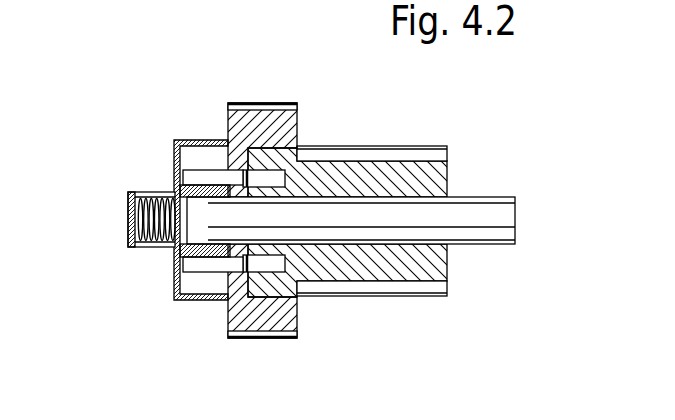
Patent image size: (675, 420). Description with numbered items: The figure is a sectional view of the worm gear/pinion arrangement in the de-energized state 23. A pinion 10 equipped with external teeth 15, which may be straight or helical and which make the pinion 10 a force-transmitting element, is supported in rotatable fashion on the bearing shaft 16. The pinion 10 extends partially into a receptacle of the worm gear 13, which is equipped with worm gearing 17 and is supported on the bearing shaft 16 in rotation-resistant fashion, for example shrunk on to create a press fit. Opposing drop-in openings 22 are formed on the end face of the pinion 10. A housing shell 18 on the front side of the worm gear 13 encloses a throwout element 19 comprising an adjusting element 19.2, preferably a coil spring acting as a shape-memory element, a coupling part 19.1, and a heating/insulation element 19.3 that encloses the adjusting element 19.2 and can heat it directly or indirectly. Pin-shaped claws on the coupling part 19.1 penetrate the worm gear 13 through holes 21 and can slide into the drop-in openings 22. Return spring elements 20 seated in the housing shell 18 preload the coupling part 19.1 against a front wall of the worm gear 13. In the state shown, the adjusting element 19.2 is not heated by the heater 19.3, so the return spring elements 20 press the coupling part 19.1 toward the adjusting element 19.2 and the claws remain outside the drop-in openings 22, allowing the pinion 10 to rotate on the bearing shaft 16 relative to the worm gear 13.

The pinion 10 is at (447, 172).
The worm gear 13 is at (300, 105).
The external teeth 15 is at (405, 147).
The bearing shaft 16 is at (468, 220).
The worm gearing 17 is at (277, 340).
The housing shell 18 is at (176, 141).
The throwout element 19 is at (158, 266).
The coupling part 19.1 is at (174, 171).
The adjusting element 19.2 is at (147, 247).
The heating/insulation element 19.3 is at (130, 200).
The return spring elements 20 is at (217, 170).
The holes 21 is at (246, 103).
The drop-in openings 22 is at (298, 149).
The de-energized state 23 is at (81, 98).